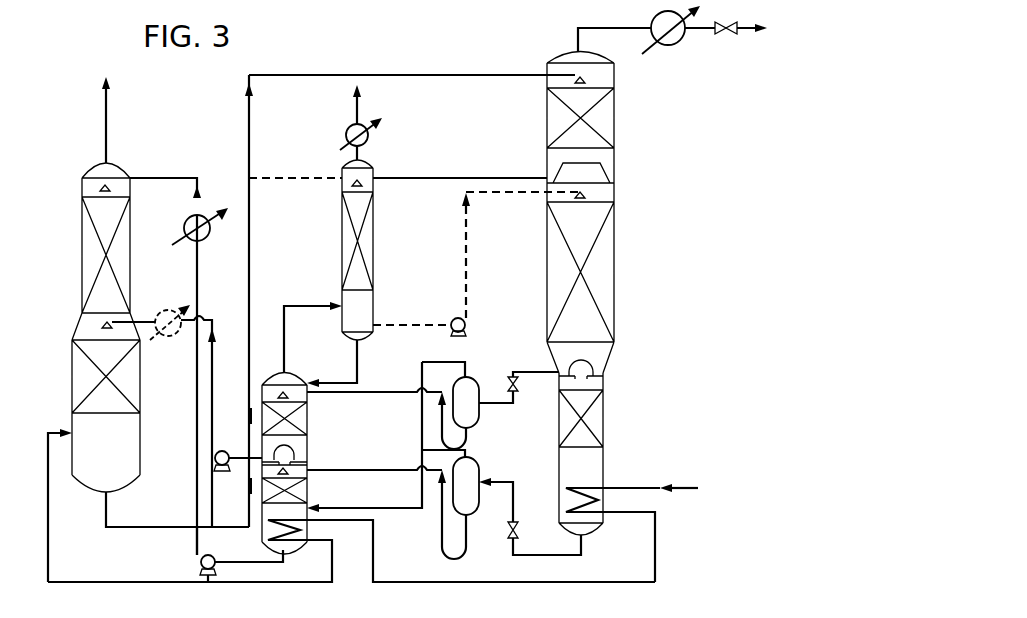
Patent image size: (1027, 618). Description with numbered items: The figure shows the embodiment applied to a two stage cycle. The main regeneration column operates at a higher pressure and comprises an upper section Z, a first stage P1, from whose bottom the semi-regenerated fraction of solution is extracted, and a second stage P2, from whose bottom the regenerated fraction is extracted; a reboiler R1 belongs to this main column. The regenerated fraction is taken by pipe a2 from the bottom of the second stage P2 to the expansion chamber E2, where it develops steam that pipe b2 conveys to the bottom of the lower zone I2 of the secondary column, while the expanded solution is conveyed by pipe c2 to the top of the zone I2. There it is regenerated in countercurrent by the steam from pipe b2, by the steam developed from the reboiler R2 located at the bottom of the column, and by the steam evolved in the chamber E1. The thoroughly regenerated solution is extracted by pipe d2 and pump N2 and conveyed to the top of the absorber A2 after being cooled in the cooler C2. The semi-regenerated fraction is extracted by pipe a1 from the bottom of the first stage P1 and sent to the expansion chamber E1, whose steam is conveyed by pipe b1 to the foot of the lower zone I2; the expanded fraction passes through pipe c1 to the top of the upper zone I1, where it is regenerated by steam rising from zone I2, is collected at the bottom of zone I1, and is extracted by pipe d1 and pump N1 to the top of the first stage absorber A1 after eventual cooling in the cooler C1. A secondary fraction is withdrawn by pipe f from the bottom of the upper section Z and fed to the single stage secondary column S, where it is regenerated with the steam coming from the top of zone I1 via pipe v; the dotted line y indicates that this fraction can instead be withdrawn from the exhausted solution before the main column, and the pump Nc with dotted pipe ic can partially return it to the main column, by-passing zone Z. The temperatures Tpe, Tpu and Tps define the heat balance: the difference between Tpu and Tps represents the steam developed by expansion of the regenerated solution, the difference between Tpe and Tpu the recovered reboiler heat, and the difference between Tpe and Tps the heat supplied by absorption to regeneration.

The first stage absorber A1 is at (147, 447).
The second stage absorber A2 is at (88, 195).
The cooler C1 is at (164, 416).
The cooler C2 is at (180, 366).
The additional secondary column S is at (344, 236).
The dotted line y is at (295, 164).
The pipe f is at (460, 165).
The temperature Tpe is at (412, 64).
The upper section of the main column Z is at (657, 94).
The first stage of the main column P1 is at (596, 281).
The second stage of the main column P2 is at (597, 454).
The pipe ic is at (412, 314).
The pump Nc is at (515, 265).
The pipe b1 is at (386, 424).
The pipe b2 is at (435, 447).
The expansion chamber E1 is at (464, 395).
The expansion chamber E2 is at (466, 482).
The pipe a1 is at (519, 372).
The pipe a2 is at (530, 522).
The pipe c1 is at (374, 405).
The pipe c2 is at (374, 453).
The upper regeneration zone I1 is at (254, 301).
The lower regeneration zone I2 is at (257, 490).
The pipe d1 is at (245, 442).
The pipe d2 is at (190, 565).
The pump N1 is at (229, 479).
The pump N2 is at (192, 555).
The temperature Tps is at (249, 549).
The reboiler R2 is at (481, 548).
The reboiler R1 is at (650, 509).
The temperature Tpu is at (626, 547).
The pipe v is at (313, 328).